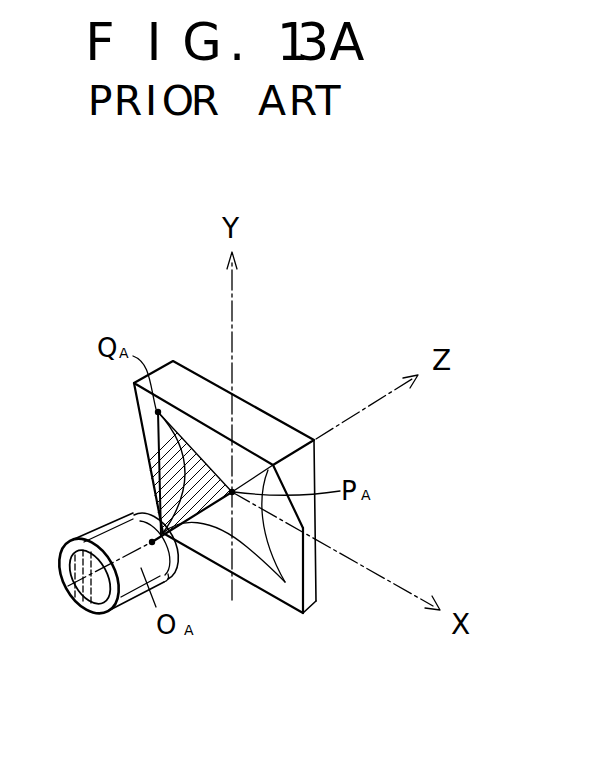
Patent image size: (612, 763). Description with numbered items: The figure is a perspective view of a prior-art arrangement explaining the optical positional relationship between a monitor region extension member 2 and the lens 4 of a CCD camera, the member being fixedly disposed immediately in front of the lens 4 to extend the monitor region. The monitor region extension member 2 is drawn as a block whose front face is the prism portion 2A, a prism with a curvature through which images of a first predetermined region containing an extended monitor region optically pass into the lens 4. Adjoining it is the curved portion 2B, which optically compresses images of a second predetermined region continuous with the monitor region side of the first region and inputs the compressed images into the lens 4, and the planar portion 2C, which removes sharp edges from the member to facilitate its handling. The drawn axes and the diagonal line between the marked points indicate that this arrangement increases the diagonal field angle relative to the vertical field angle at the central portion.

The monitor region extension member 2 is at (186, 378).
The prism portion 2A is at (285, 478).
The curved portion 2B is at (307, 530).
The planar portion 2C is at (309, 591).
The lens 4 is at (137, 516).